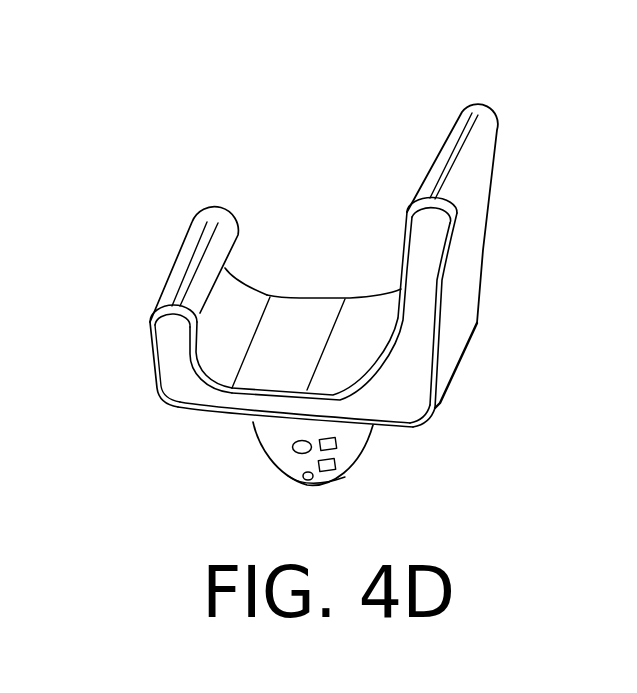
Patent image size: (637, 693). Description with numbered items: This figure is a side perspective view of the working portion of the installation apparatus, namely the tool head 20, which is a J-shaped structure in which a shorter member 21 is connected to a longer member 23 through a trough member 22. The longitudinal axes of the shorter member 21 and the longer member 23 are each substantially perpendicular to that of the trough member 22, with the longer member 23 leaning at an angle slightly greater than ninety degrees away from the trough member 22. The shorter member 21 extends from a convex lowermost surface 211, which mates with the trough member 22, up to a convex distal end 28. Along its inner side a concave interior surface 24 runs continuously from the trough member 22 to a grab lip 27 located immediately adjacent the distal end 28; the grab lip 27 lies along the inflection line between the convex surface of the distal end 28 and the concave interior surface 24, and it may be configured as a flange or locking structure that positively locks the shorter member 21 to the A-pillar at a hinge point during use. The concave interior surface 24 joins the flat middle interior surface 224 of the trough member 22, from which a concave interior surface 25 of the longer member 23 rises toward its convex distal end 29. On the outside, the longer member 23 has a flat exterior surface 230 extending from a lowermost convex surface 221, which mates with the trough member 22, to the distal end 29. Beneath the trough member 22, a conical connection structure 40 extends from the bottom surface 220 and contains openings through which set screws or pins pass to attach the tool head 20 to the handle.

The tool head 20 is at (317, 307).
The shorter member 21 is at (167, 348).
The trough member 22 is at (247, 405).
The longer member 23 is at (427, 265).
The concave interior surface 24 is at (250, 292).
The concave interior surface 25 is at (372, 308).
The grab lip 27 is at (235, 266).
The distal end 28 is at (212, 222).
The distal end 29 is at (471, 113).
The connection structure 40 is at (353, 453).
The convex lowermost surface 211 is at (168, 408).
The bottom surface 220 is at (397, 427).
The lowermost convex surface 221 is at (432, 423).
The middle interior surface 224 is at (263, 362).
The exterior surface 230 is at (477, 213).